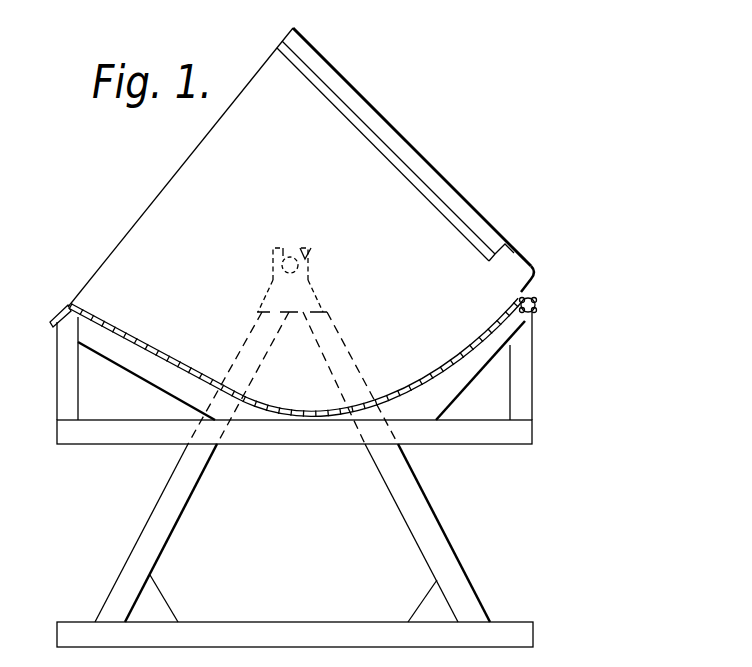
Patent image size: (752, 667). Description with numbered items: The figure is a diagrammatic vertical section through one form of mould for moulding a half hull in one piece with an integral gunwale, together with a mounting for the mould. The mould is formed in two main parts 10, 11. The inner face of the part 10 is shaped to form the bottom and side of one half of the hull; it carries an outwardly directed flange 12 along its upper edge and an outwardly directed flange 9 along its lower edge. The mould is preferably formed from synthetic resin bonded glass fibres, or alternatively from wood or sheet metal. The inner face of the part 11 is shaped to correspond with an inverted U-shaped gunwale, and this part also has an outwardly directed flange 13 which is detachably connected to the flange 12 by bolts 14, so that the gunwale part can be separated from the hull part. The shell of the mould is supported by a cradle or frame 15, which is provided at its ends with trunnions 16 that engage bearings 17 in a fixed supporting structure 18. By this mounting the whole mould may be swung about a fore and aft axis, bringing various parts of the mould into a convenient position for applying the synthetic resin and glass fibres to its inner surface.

The outwardly directed flange 9 is at (55, 320).
The mould part 10 is at (414, 398).
The mould part 11 is at (532, 270).
The outwardly directed flange 12 is at (536, 314).
The outwardly directed flange 13 is at (537, 307).
The bolts 14 is at (537, 290).
The cradle or frame 15 is at (112, 432).
The trunnions 16 is at (286, 246).
The bearings 17 is at (313, 246).
The fixed supporting structure 18 is at (238, 622).